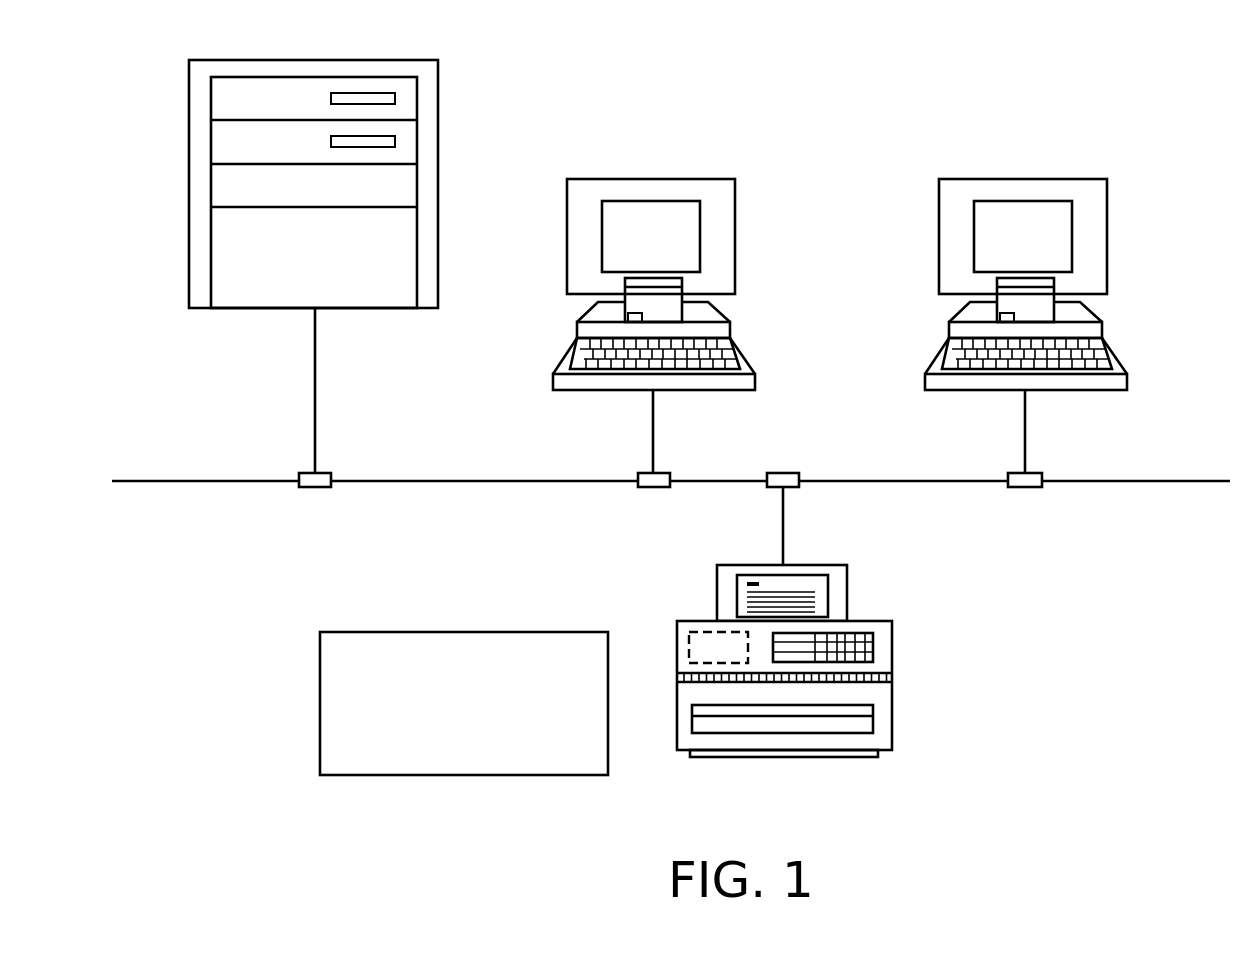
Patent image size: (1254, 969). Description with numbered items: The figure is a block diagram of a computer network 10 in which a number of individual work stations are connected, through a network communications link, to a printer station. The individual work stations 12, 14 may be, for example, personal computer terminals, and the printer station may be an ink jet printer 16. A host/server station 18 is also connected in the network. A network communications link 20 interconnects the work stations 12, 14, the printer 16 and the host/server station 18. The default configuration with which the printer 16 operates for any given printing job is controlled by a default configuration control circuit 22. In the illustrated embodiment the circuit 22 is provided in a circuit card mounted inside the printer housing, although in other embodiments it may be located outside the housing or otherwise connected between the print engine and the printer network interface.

The computer network 10 is at (345, 528).
The work station 12 is at (722, 197).
The work station 14 is at (1095, 198).
The printer 16 is at (884, 645).
The host/server station 18 is at (428, 77).
The network communications link 20 is at (430, 481).
The default configuration control circuit 22 is at (700, 646).